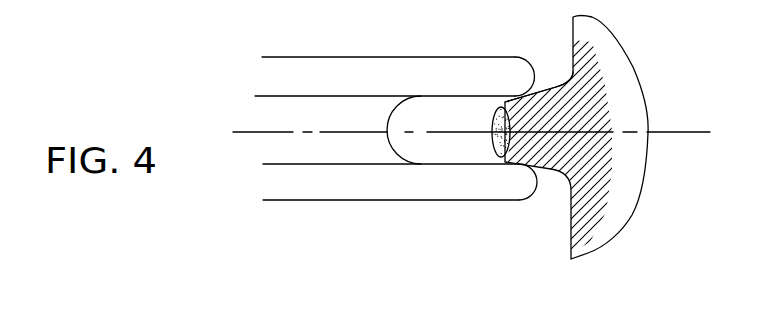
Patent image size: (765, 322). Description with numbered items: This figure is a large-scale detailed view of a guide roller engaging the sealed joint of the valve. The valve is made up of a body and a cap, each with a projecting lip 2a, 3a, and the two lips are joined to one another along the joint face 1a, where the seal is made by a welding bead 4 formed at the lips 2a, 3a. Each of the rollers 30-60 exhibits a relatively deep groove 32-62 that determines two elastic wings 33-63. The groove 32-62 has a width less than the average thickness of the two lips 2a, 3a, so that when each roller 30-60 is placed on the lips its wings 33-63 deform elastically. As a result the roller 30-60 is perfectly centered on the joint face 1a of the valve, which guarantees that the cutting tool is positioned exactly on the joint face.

The joint face 1a is at (684, 133).
The projecting lip 2a is at (496, 118).
The projecting lip 3a is at (532, 118).
The welding bead 4 is at (494, 157).
The rollers 30-60 is at (401, 52).
The elastic wings 33-63 is at (518, 47).
The groove 32-62 is at (402, 154).